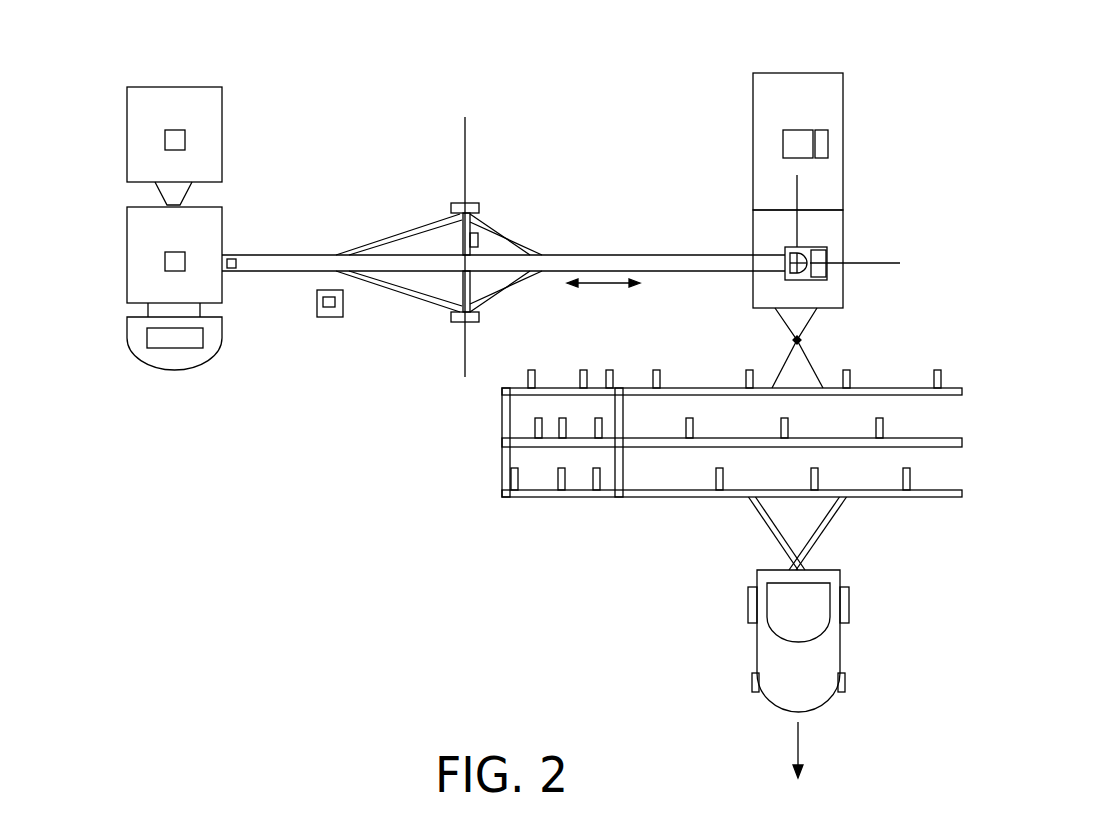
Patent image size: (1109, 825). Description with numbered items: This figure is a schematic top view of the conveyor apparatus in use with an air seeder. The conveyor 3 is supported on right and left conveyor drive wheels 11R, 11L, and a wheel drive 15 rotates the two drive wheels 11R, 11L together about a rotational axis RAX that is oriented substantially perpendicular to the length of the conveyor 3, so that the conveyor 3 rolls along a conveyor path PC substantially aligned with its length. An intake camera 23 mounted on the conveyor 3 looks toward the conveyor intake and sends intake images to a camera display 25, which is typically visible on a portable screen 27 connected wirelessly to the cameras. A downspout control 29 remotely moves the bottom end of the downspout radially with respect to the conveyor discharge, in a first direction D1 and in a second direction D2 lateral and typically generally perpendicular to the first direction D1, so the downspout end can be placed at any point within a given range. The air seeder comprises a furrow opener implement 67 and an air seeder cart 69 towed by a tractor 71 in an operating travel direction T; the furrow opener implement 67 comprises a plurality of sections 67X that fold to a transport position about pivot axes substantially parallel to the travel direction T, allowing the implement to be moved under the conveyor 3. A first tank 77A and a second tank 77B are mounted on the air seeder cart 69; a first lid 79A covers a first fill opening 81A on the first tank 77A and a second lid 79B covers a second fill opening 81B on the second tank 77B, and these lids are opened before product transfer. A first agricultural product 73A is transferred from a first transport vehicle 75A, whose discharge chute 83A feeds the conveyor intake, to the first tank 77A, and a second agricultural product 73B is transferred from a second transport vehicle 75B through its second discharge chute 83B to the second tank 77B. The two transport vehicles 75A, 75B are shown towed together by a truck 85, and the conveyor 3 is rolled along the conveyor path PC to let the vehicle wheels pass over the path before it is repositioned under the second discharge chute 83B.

The conveyor 3 is at (580, 255).
The right conveyor drive wheel 11R is at (473, 202).
The left conveyor drive wheel 11L is at (473, 323).
The wheel drive 15 is at (478, 240).
The intake camera 23 is at (236, 262).
The camera display 25 is at (332, 317).
The portable screen 27 is at (313, 313).
The downspout control 29 is at (800, 250).
The furrow opener implement 67 is at (732, 465).
The sections 67X is at (572, 498).
The air seeder cart 69 is at (802, 208).
The tractor 71 is at (843, 643).
The first agricultural product 73A is at (148, 260).
The second agricultural product 73B is at (148, 155).
The first transport vehicle 75A is at (127, 295).
The second transport vehicle 75B is at (223, 110).
The first tank 77A is at (753, 302).
The second tank 77B is at (753, 90).
The first lid 79A is at (828, 278).
The second lid 79B is at (828, 132).
The first fill opening 81A is at (785, 250).
The second fill opening 81B is at (783, 145).
The discharge chute 83A is at (165, 253).
The second discharge chute 83B is at (165, 133).
The truck 85 is at (165, 371).
The rotational axis RAX is at (466, 120).
The conveyor path PC is at (603, 301).
The first direction D1 is at (868, 256).
The second direction D2 is at (798, 183).
The operating travel direction T is at (811, 752).